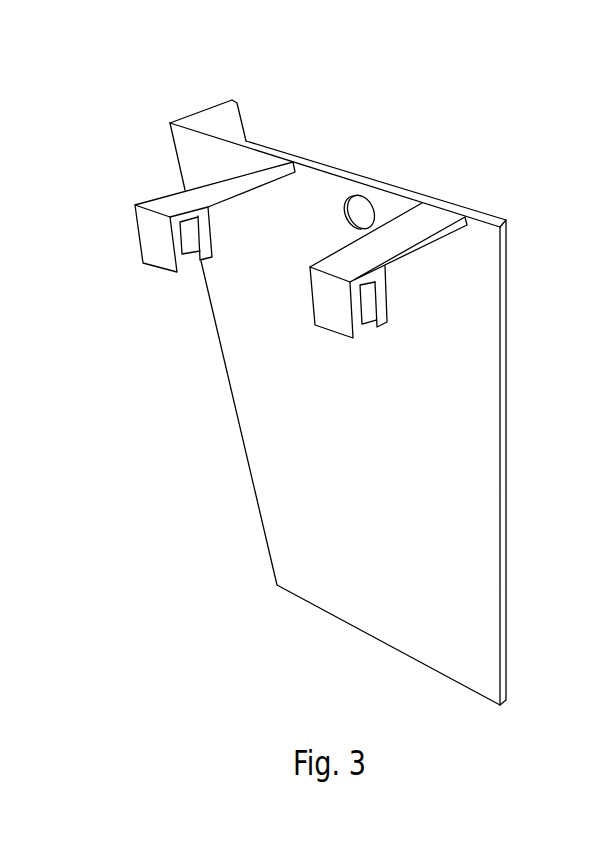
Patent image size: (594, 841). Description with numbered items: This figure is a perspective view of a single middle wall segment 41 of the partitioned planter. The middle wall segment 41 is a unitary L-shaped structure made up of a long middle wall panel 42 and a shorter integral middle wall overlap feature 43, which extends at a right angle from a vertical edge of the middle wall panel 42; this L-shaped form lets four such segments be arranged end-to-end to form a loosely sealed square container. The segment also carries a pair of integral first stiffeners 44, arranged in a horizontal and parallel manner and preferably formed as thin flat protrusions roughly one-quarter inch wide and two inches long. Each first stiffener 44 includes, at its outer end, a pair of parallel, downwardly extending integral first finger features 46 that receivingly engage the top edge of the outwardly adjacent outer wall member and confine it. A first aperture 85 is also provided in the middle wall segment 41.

The middle wall segment 41 is at (398, 136).
The middle wall panel 42 is at (378, 545).
The middle wall overlap feature 43 is at (197, 108).
The first stiffener 44 is at (347, 258).
The first finger feature 46 is at (201, 250).
The first aperture 85 is at (364, 211).